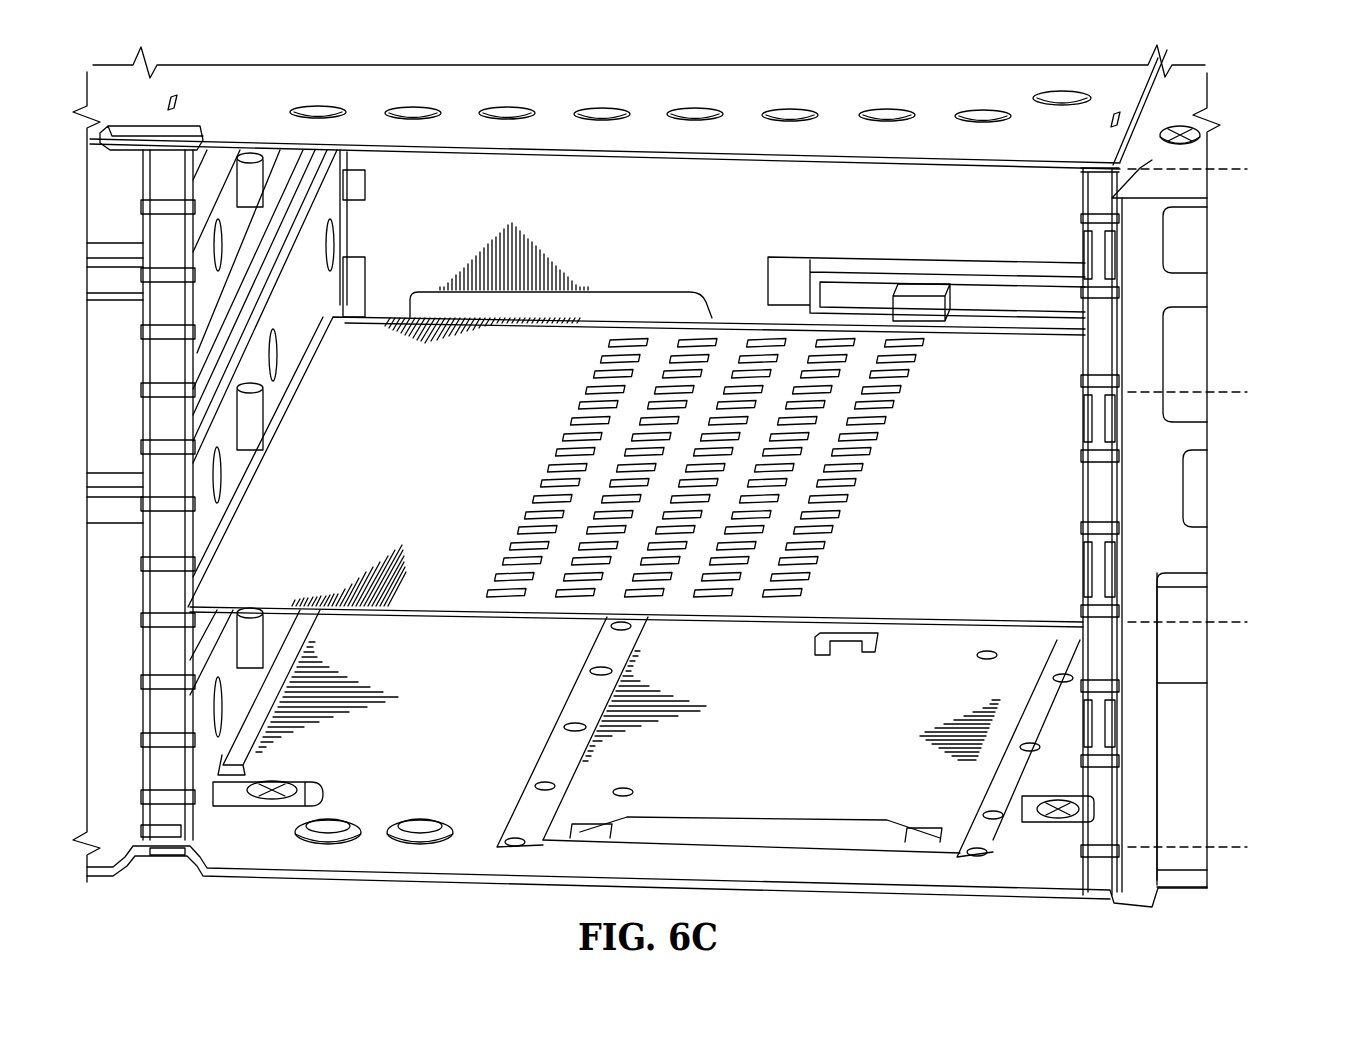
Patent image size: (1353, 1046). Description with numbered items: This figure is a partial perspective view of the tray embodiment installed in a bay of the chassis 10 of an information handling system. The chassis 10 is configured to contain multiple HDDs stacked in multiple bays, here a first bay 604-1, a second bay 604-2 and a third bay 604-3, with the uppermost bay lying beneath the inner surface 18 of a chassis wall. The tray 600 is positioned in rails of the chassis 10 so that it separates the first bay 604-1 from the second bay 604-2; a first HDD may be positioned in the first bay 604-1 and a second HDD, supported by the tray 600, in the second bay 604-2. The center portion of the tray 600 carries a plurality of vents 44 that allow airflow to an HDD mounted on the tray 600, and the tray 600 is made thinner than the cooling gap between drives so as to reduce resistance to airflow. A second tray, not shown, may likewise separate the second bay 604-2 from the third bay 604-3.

The chassis 10 is at (1270, 141).
The inner surface 18 is at (1024, 168).
The vents 44 is at (538, 605).
The tray 600 is at (604, 340).
The first bay 604-1 is at (1248, 625).
The second bay 604-2 is at (1248, 395).
The third bay 604-3 is at (1248, 170).